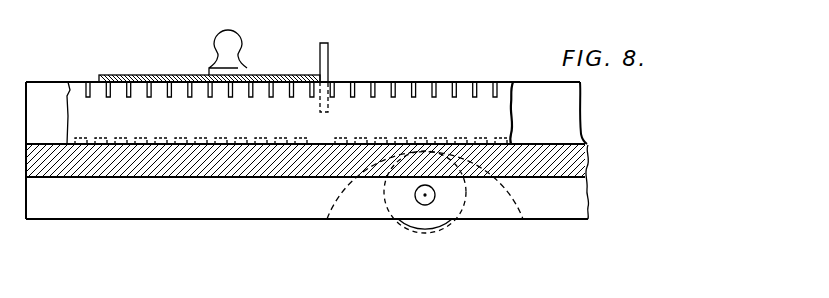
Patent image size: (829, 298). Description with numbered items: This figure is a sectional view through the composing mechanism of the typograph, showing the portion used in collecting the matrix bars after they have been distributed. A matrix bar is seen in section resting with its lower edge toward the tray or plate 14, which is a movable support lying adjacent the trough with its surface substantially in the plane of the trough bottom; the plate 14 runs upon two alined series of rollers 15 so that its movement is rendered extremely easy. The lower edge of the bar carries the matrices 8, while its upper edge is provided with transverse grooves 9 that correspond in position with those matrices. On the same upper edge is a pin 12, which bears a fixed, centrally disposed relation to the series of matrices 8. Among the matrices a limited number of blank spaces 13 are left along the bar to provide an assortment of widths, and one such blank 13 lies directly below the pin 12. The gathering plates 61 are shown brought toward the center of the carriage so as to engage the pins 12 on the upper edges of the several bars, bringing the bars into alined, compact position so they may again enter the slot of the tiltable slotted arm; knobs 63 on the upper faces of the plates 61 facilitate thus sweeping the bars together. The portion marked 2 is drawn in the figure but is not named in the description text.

The housing wall 2 is at (515, 92).
The matrices 8 is at (262, 150).
The transverse grooves 9 is at (416, 82).
The pin 12 is at (326, 58).
The blank spaces 13 is at (320, 150).
The tray or plate 14 is at (555, 145).
The rollers 15 is at (442, 230).
The plates 61 is at (159, 75).
The knobs 63 is at (234, 41).